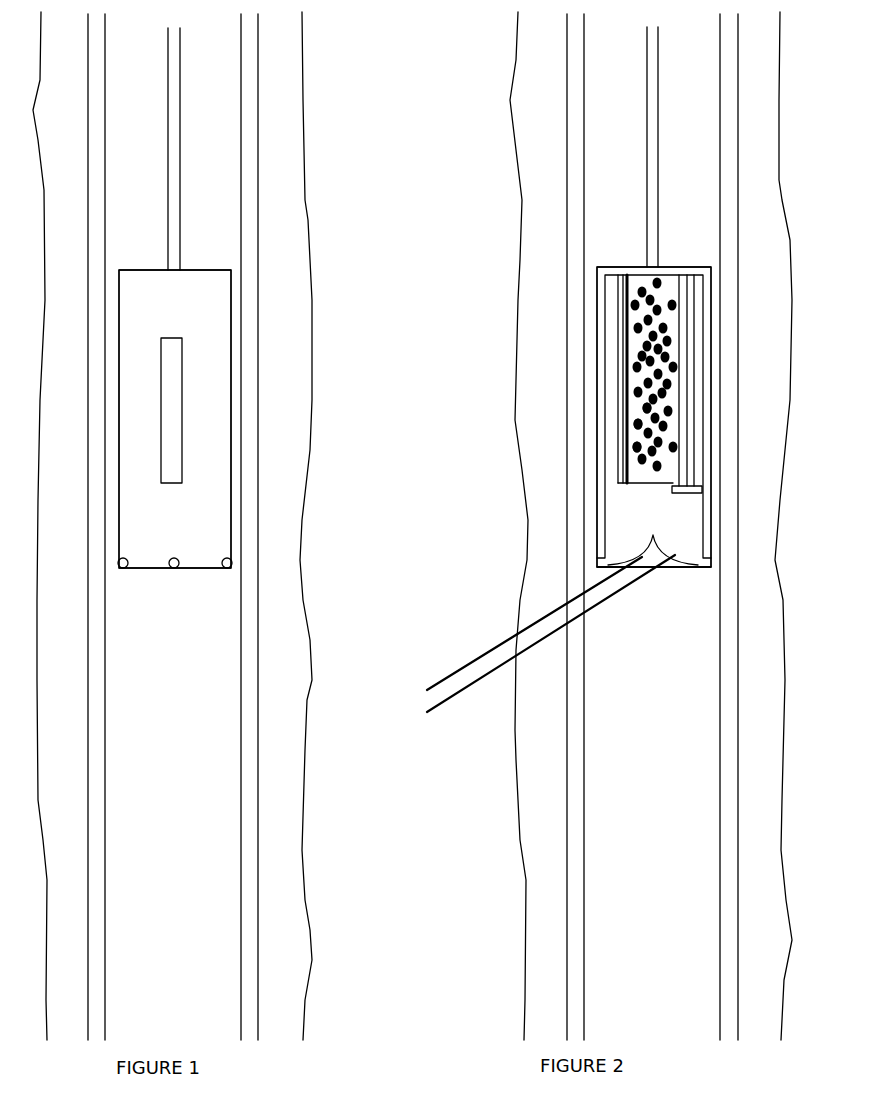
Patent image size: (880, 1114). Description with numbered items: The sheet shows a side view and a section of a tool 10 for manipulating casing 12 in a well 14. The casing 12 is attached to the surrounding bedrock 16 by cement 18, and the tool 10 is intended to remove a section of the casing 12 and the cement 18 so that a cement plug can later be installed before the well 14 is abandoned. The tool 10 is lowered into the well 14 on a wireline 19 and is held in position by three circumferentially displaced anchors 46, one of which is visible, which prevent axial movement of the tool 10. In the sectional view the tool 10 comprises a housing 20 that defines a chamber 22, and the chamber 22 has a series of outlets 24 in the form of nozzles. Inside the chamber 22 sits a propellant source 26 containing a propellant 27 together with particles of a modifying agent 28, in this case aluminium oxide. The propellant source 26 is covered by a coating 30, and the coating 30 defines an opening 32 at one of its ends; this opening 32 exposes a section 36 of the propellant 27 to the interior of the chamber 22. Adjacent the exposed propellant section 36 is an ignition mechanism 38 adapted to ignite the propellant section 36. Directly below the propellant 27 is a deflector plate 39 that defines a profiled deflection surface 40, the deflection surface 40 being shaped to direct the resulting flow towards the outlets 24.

In FIG. 1, the tool 10 is at (229, 258).
In FIG. 2, the tool 10 is at (592, 247).
In FIG. 1, the casing 12 is at (252, 754).
In FIG. 2, the casing 12 is at (568, 757).
In FIG. 1, the well 14 is at (205, 883).
In FIG. 2, the well 14 is at (591, 853).
In FIG. 1, the bedrock 16 is at (315, 890).
In FIG. 2, the bedrock 16 is at (500, 889).
In FIG. 1, the cement 18 is at (275, 958).
In FIG. 2, the cement 18 is at (536, 938).
In FIG. 1, the wireline 19 is at (190, 140).
In FIG. 2, the wireline 19 is at (642, 149).
In FIG. 1, the housing 20 is at (205, 357).
In FIG. 2, the housing 20 is at (598, 358).
In FIG. 2, the chamber 22 is at (610, 463).
In FIG. 1, the outlets 24 is at (231, 565).
In FIG. 2, the outlets 24 is at (640, 557).
In FIG. 2, the propellant source 26 is at (635, 402).
In FIG. 2, the propellant 27 is at (633, 412).
In FIG. 2, the modifying agent 28 is at (632, 423).
In FIG. 2, the coating 30 is at (618, 327).
In FIG. 2, the opening 32 is at (647, 487).
In FIG. 2, the propellant section 36 is at (598, 566).
In FIG. 2, the ignition mechanism 38 is at (685, 488).
In FIG. 2, the deflector plate 39 is at (518, 627).
In FIG. 2, the deflection surface 40 is at (534, 639).
In FIG. 1, the anchors 46 is at (170, 440).